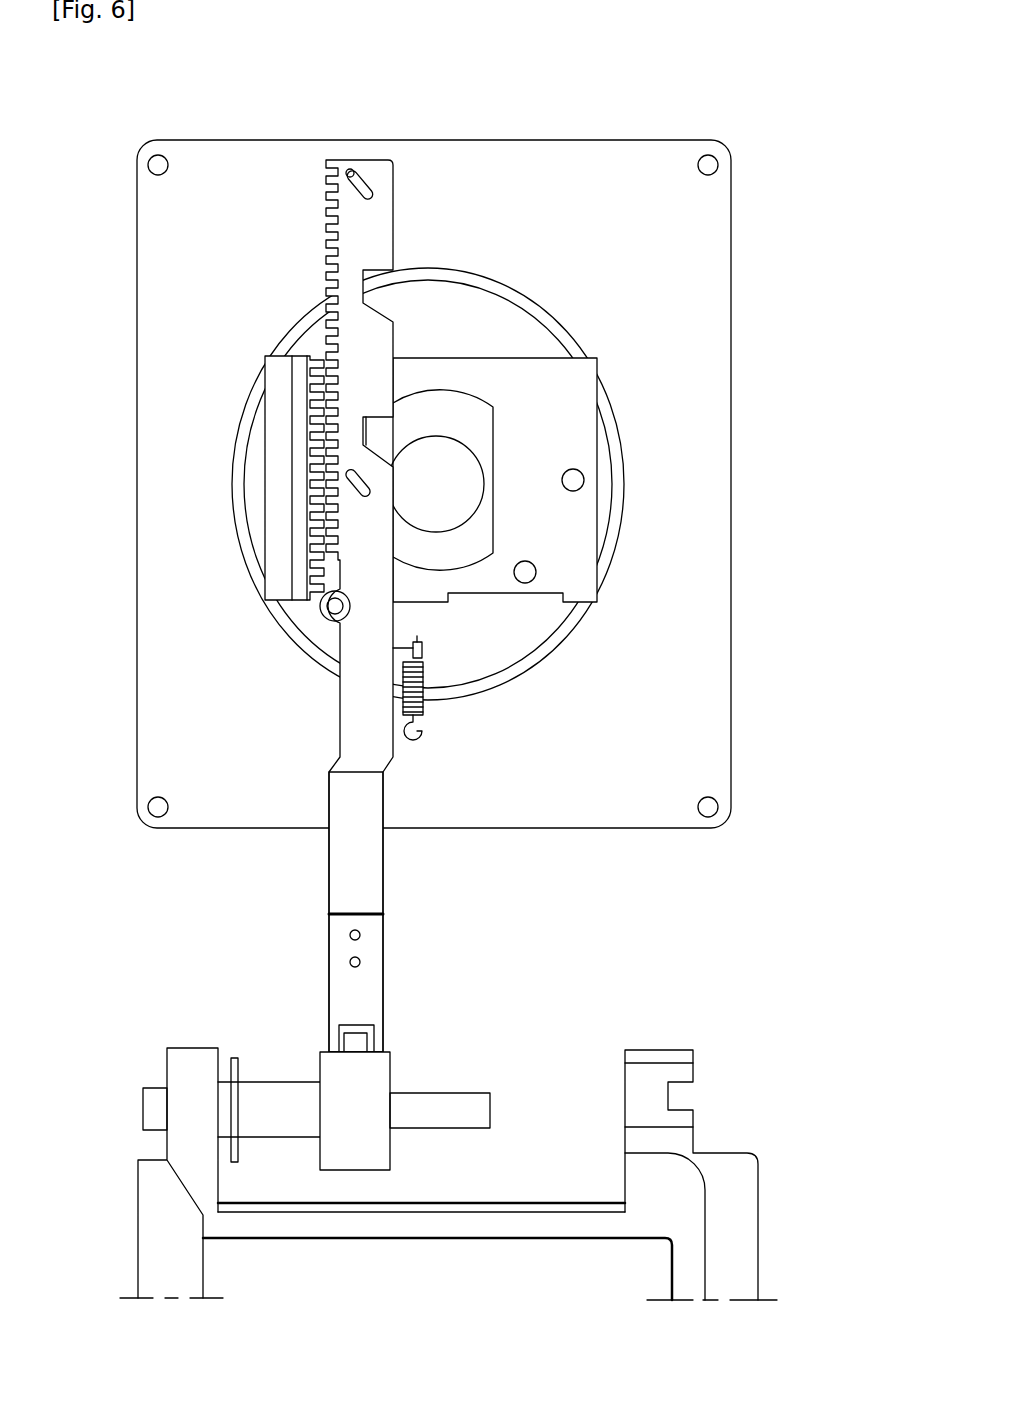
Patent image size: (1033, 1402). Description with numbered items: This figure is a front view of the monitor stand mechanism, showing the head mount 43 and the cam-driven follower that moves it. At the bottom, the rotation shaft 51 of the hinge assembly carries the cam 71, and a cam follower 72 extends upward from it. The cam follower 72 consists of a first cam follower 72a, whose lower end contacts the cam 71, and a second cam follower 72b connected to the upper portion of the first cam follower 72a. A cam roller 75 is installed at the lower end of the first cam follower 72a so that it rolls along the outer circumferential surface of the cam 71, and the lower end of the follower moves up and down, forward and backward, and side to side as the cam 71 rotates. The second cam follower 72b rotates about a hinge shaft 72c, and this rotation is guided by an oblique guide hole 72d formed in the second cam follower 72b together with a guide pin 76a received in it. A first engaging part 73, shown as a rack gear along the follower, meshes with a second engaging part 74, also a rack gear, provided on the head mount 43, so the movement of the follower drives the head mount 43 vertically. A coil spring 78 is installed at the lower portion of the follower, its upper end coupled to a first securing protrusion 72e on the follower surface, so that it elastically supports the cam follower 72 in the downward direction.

The head mount 43 is at (572, 412).
The rotation shaft 51 is at (482, 1112).
The cam 71 is at (358, 1137).
The cam follower 72 is at (260, 912).
The first cam follower 72a is at (300, 983).
The second cam follower 72b is at (345, 877).
The hinge shaft 72c is at (350, 935).
The guide hole 72d is at (370, 193).
The first securing protrusion 72e is at (420, 648).
The first engaging part 73 is at (330, 243).
The second engaging part 74 is at (320, 430).
The cam roller 75 is at (358, 1030).
The guide pin 76a is at (350, 170).
The coil spring 78 is at (423, 712).